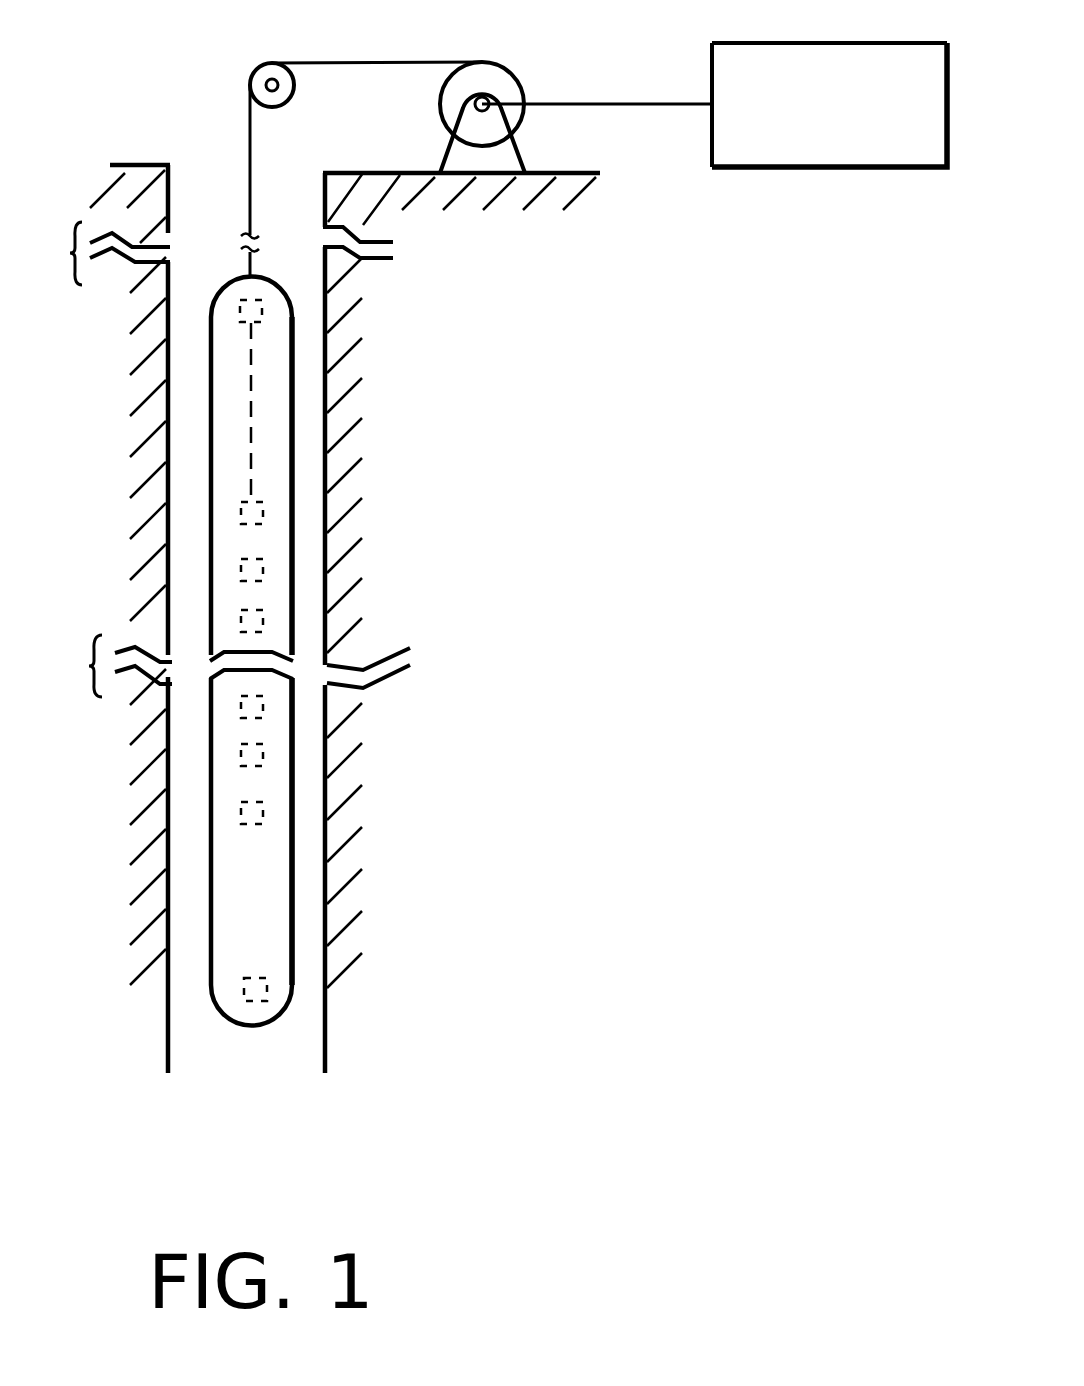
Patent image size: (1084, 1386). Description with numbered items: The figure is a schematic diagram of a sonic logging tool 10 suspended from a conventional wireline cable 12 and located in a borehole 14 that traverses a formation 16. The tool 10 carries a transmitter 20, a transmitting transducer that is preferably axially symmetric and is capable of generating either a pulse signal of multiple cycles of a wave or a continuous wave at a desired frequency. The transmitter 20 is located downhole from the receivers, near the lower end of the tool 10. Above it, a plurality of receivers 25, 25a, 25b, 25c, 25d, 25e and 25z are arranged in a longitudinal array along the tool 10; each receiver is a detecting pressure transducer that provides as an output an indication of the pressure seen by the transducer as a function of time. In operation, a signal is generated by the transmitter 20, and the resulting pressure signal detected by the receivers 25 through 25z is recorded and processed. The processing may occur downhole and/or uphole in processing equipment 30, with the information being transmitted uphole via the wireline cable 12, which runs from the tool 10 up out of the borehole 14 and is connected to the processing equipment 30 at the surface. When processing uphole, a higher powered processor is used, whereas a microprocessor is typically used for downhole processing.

The sonic logging tool 10 is at (295, 385).
The wireline cable 12 is at (250, 187).
The borehole 14 is at (324, 453).
The formation 16 is at (597, 452).
The transmitter 20 is at (252, 1003).
The receiver 25 is at (264, 818).
The receiver 25a is at (264, 760).
The receiver 25b is at (264, 712).
The receiver 25c is at (264, 628).
The receiver 25d is at (264, 576).
The receiver 25e is at (264, 520).
The receiver 25z is at (263, 311).
The processing equipment 30 is at (813, 43).